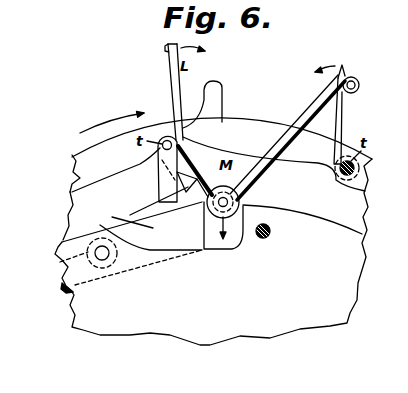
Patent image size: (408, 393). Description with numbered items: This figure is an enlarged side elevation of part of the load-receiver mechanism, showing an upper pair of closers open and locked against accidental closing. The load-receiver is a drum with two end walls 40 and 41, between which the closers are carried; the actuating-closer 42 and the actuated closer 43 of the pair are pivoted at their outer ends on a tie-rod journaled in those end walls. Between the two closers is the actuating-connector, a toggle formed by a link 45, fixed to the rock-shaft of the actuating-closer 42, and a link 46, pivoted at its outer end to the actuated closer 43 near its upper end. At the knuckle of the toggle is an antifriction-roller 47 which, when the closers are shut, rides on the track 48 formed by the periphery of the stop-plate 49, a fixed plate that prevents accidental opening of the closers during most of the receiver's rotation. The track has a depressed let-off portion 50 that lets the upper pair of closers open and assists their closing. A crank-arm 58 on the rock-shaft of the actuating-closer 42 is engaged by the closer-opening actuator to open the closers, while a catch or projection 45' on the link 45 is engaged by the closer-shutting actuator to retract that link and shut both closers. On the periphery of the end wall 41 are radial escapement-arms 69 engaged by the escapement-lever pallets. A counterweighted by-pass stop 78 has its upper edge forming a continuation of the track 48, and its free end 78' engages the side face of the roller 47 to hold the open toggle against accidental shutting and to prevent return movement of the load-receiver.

The end wall 40 is at (82, 198).
The end wall 41 is at (83, 155).
The actuating-closer 42 is at (340, 125).
The actuated closer 43 is at (174, 86).
The link 45 is at (199, 163).
The catch or projection 45' is at (164, 193).
The link 46 is at (293, 138).
The antifriction-roller 47 is at (214, 217).
The track 48 is at (323, 222).
The stop-plate 49 is at (165, 318).
The depressed or let-off portion 50 is at (233, 246).
The crank-arm 58 is at (158, 180).
The escapement-arm 69 is at (218, 97).
The by-pass stop 78 is at (105, 247).
The free end 78' is at (121, 218).